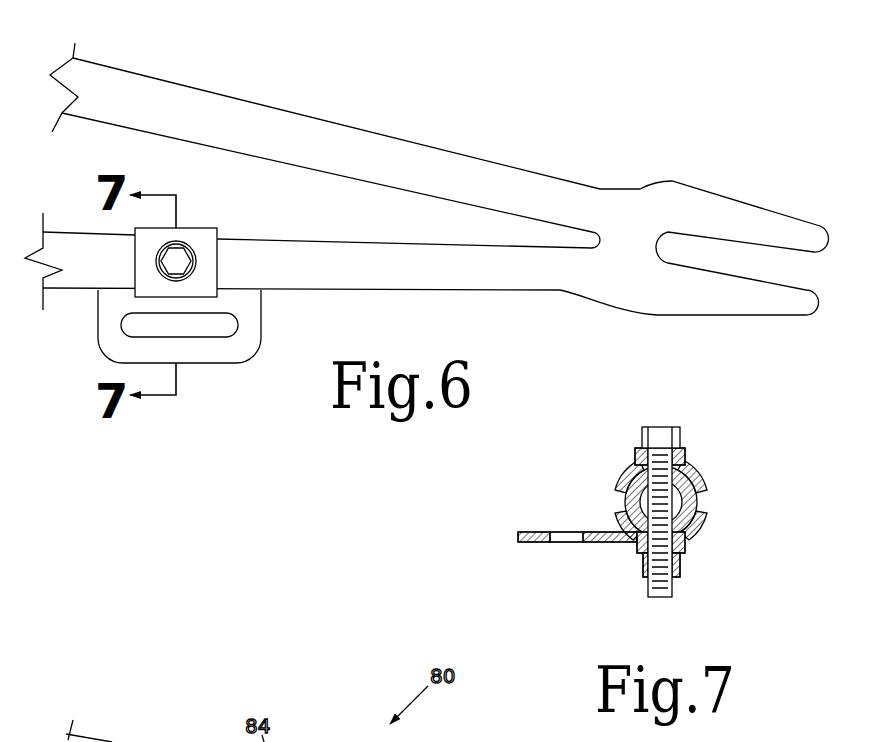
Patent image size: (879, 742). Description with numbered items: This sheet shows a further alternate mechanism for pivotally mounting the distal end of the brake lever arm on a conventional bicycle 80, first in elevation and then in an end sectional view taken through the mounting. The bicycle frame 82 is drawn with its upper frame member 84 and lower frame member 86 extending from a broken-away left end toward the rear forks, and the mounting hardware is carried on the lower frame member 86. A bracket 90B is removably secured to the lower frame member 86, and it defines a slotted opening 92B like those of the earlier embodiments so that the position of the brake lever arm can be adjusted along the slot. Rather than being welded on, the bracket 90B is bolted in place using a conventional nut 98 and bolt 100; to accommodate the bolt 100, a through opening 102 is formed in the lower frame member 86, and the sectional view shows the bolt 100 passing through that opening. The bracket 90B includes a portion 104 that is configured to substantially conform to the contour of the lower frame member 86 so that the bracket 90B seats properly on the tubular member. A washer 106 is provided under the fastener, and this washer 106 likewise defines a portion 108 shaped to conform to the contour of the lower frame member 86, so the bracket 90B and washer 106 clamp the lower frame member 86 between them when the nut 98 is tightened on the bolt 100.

In FIG. 6, the bicycle 80 is at (426, 175).
In FIG. 6, the bicycle frame 82 is at (545, 166).
In FIG. 6, the upper frame member 84 is at (462, 172).
In FIG. 6, the lower frame member 86 is at (473, 265).
In FIG. 7, the lower frame member 86 is at (622, 505).
In FIG. 6, the bracket 90B is at (253, 320).
In FIG. 7, the bracket 90B is at (610, 542).
In FIG. 6, the slotted opening 92B is at (213, 323).
In FIG. 7, the slotted opening 92B is at (560, 537).
In FIG. 7, the nut 98 is at (680, 570).
In FIG. 6, the bolt 100 is at (170, 262).
In FIG. 7, the bolt 100 is at (642, 438).
In FIG. 7, the through opening 102 is at (618, 497).
In FIG. 7, the portion 104 is at (703, 533).
In FIG. 6, the washer 106 is at (203, 238).
In FIG. 7, the washer 106 is at (638, 455).
In FIG. 7, the portion 108 is at (693, 470).